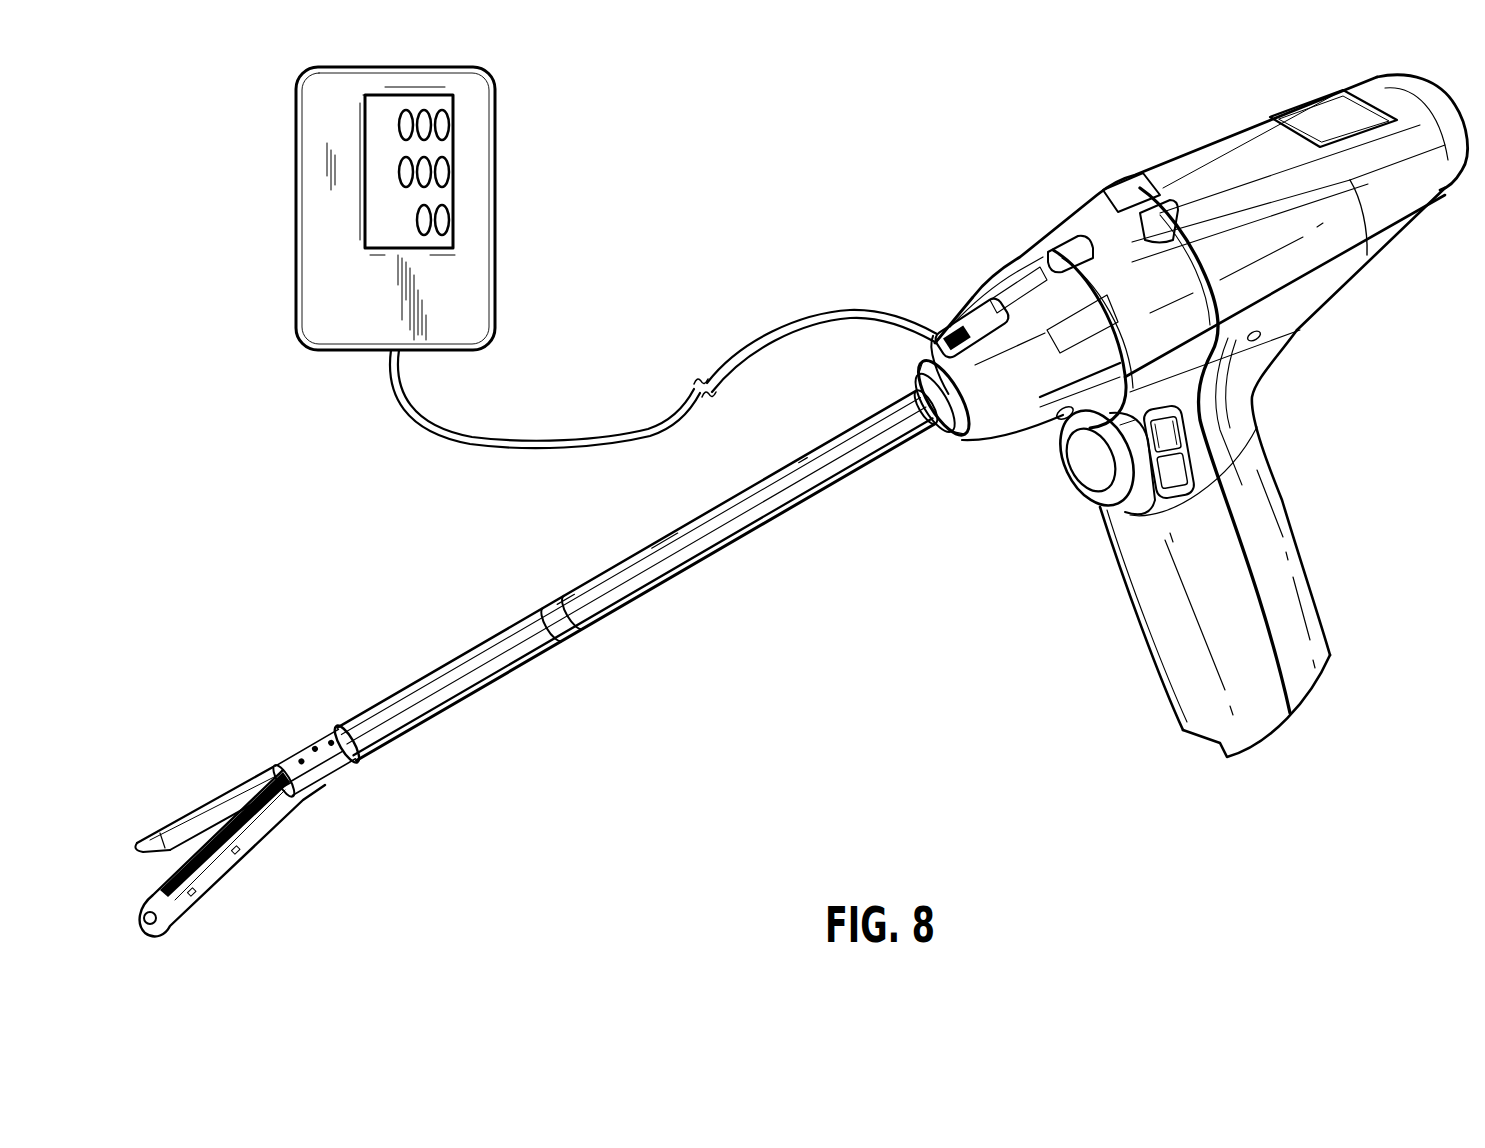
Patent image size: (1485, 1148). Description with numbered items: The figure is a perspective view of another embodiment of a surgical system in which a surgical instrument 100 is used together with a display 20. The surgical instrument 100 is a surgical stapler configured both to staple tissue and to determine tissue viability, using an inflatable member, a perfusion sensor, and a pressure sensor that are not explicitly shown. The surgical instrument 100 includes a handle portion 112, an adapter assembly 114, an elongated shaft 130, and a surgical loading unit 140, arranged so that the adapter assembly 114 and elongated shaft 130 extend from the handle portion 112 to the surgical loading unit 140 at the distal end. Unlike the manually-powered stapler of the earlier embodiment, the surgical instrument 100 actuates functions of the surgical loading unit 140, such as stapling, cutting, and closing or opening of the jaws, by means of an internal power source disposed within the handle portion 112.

The display 20 is at (495, 148).
The surgical instrument 100 is at (984, 238).
The handle portion 112 is at (1238, 142).
The adapter assembly 114 is at (980, 427).
The elongated shaft 130 is at (776, 510).
The surgical loading unit 140 is at (530, 597).